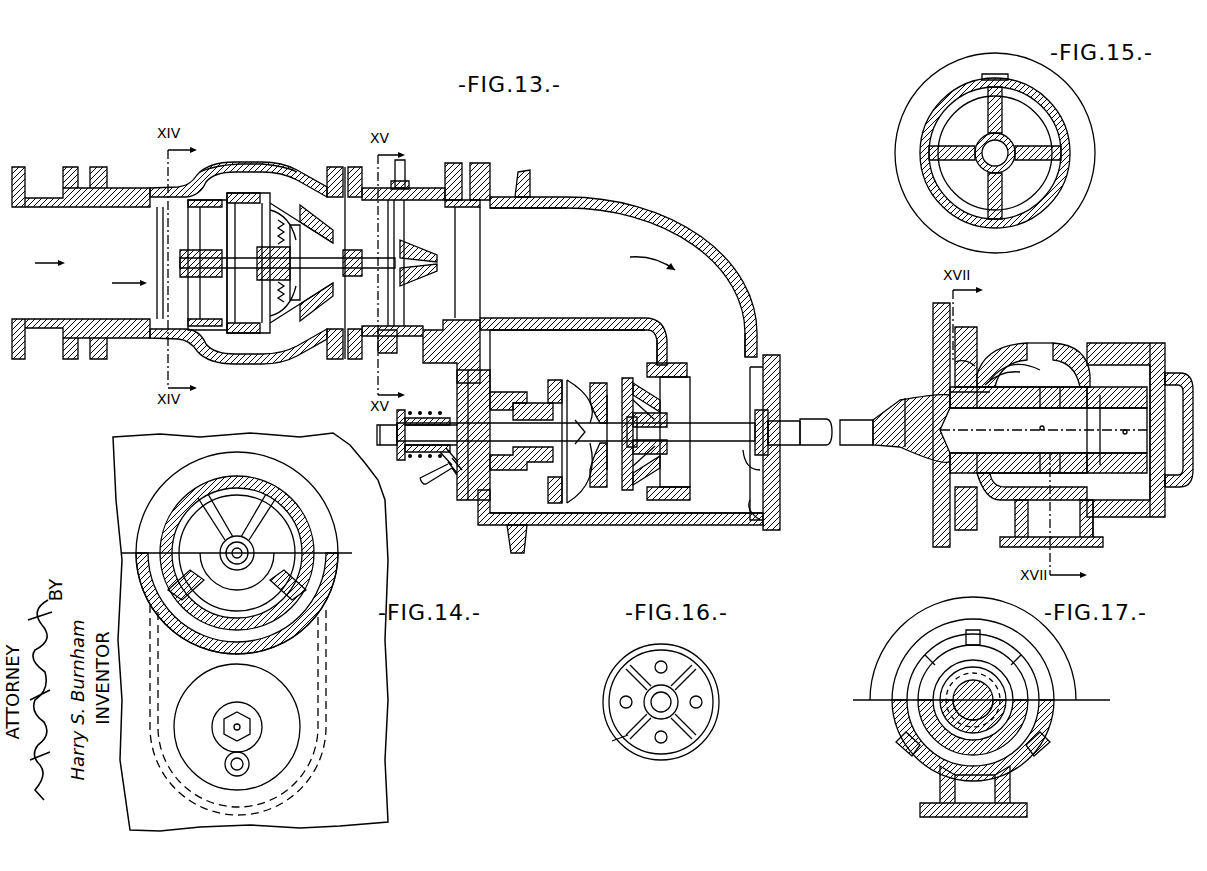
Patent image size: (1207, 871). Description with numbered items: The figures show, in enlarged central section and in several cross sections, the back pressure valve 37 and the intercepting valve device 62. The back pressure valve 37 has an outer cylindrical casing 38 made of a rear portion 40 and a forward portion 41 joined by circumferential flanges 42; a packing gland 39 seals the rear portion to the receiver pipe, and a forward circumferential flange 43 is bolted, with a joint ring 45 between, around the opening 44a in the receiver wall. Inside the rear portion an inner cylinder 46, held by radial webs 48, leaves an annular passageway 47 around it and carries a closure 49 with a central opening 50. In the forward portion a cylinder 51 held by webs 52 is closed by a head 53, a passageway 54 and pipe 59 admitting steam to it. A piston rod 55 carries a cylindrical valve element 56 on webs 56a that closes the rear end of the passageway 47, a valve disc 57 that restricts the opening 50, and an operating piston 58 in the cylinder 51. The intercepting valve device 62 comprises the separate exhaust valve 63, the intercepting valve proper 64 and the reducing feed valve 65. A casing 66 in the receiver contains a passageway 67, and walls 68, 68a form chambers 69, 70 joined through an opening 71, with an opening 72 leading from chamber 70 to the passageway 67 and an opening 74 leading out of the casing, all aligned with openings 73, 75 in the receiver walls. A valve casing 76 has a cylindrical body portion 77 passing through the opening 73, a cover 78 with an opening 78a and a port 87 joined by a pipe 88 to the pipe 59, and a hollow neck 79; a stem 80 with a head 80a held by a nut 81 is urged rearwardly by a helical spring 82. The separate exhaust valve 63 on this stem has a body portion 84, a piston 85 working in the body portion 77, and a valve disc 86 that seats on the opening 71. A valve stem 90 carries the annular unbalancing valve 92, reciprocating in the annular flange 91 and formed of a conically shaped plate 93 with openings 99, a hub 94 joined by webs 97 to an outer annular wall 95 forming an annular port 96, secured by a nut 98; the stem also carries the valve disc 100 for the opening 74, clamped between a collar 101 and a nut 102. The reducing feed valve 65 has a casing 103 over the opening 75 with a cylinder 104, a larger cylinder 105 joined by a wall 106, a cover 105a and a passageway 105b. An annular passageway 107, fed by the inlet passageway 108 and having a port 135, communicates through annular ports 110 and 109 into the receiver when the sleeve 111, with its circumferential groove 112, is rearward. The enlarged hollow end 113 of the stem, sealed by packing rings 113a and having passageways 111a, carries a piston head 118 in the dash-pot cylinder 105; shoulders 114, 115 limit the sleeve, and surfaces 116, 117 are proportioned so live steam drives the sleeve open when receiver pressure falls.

In FIG. 13, the packing gland 39 is at (68, 167).
In FIG. 13, the annular passageway 47 is at (222, 178).
In FIG. 13, the outer cylindrical casing 38 is at (238, 162).
In FIG. 13, the back pressure valve 37 is at (276, 182).
In FIG. 13, the rear portion 40 is at (303, 336).
In FIG. 13, the circumferential flanges 42 is at (336, 167).
In FIG. 13, the webs 52 is at (386, 350).
In FIG. 15, the webs 52 is at (948, 130).
In FIG. 13, the forward portion 41 is at (431, 331).
In FIG. 13, the pipe 59 is at (403, 168).
In FIG. 13, the circumferential flange 43 is at (452, 166).
In FIG. 13, the joint ring 45 is at (471, 306).
In FIG. 13, the head 53 is at (408, 256).
In FIG. 13, the passageway 54 is at (403, 218).
In FIG. 13, the operating piston 58 is at (355, 250).
In FIG. 13, the cylinder 51 is at (405, 275).
In FIG. 13, the opening 44a is at (482, 211).
In FIG. 13, the cylindrical valve element 56 is at (205, 320).
In FIG. 13, the webs 56a is at (195, 290).
In FIG. 14, the webs 56a is at (205, 517).
In FIG. 13, the inner cylinder 46 is at (225, 215).
In FIG. 13, the closure 49 is at (278, 220).
In FIG. 13, the radial webs 48 is at (283, 203).
In FIG. 14, the radial webs 48 is at (312, 630).
In FIG. 13, the valve disc 57 is at (292, 252).
In FIG. 13, the piston rod 55 is at (324, 262).
In FIG. 13, the opening 50 is at (278, 310).
In FIG. 13, the casing 66 is at (698, 235).
In FIG. 13, the passageway 67 is at (636, 273).
In FIG. 13, the intercepting valve proper 64 is at (758, 335).
In FIG. 13, the wall 68 is at (552, 332).
In FIG. 13, the wall 68a is at (649, 352).
In FIG. 13, the annular flange 91 is at (673, 364).
In FIG. 13, the opening 74 is at (756, 381).
In FIG. 13, the separate exhaust valve 63 is at (597, 478).
In FIG. 13, the cylindrical body portion 84 is at (508, 547).
In FIG. 13, the valve casing 76 is at (458, 395).
In FIG. 13, the cylindrical body portion 77 is at (528, 376).
In FIG. 13, the piston 85 is at (523, 465).
In FIG. 13, the opening 73 is at (486, 500).
In FIG. 13, the chamber 69 is at (510, 361).
In FIG. 13, the chamber 70 is at (579, 417).
In FIG. 13, the opening 71 is at (547, 400).
In FIG. 13, the nut 98 is at (616, 392).
In FIG. 13, the valve disc 86 is at (608, 472).
In FIG. 13, the conically shaped plate 93 is at (627, 493).
In FIG. 16, the conically shaped plate 93 is at (621, 725).
In FIG. 13, the hub 94 is at (669, 422).
In FIG. 16, the hub 94 is at (670, 720).
In FIG. 13, the annular port 96 is at (641, 385).
In FIG. 13, the annular unbalancing valve 92 is at (669, 392).
In FIG. 16, the annular unbalancing valve 92 is at (714, 684).
In FIG. 13, the outer annular wall 95 is at (648, 496).
In FIG. 16, the outer annular wall 95 is at (648, 652).
In FIG. 13, the opening 72 is at (681, 487).
In FIG. 13, the valve stem 90 is at (811, 430).
In FIG. 13, the valve disc 100 is at (771, 372).
In FIG. 13, the collar 101 is at (791, 420).
In FIG. 13, the nut 102 is at (761, 449).
In FIG. 13, the stem 80 is at (377, 437).
In FIG. 13, the head 80a is at (396, 429).
In FIG. 13, the nut 81 is at (405, 451).
In FIG. 13, the hollow neck 79 is at (408, 411).
In FIG. 13, the cover 78 is at (458, 476).
In FIG. 13, the opening 78a is at (445, 462).
In FIG. 13, the helical spring 82 is at (425, 477).
In FIG. 13, the port 87 is at (455, 480).
In FIG. 13, the pipe 88 is at (449, 468).
In FIG. 13, the intercepting valve device 62 is at (937, 450).
In FIG. 13, the reducing feed valve 65 is at (1027, 475).
In FIG. 13, the opening 75 is at (948, 370).
In FIG. 13, the surface 116 is at (940, 472).
In FIG. 13, the unbalanced surface 117 is at (940, 475).
In FIG. 13, the circumferential groove 112 is at (990, 398).
In FIG. 13, the packing rings 113a is at (1033, 421).
In FIG. 13, the enlarged hollow end 113 is at (1047, 398).
In FIG. 17, the enlarged hollow end 113 is at (1020, 762).
In FIG. 13, the sleeve 111 is at (1050, 426).
In FIG. 17, the sleeve 111 is at (932, 762).
In FIG. 13, the passageways 111a is at (1046, 428).
In FIG. 13, the annular port 109 is at (951, 493).
In FIG. 17, the annular port 109 is at (940, 645).
In FIG. 13, the inwardly extending shoulder 114 is at (935, 368).
In FIG. 13, the outwardly extending shoulder 115 is at (945, 392).
In FIG. 13, the cylinder 104 is at (1027, 350).
In FIG. 17, the cylinder 104 is at (925, 736).
In FIG. 13, the port 135 is at (1046, 352).
In FIG. 13, the annular port 110 is at (986, 358).
In FIG. 13, the annular passageway 107 is at (1006, 368).
In FIG. 13, the valve casing 103 is at (1088, 360).
In FIG. 17, the valve casing 103 is at (1040, 729).
In FIG. 13, the wall 106 is at (1091, 368).
In FIG. 13, the cylinder 105 is at (1131, 508).
In FIG. 13, the cover 105a is at (1176, 520).
In FIG. 13, the passageway 105b is at (1090, 495).
In FIG. 13, the piston head 118 is at (1098, 506).
In FIG. 13, the inlet passageway 108 is at (1071, 536).
In FIG. 17, the inlet passageway 108 is at (973, 791).
In FIG. 16, the openings 99 is at (664, 664).
In FIG. 16, the webs 97 is at (628, 690).